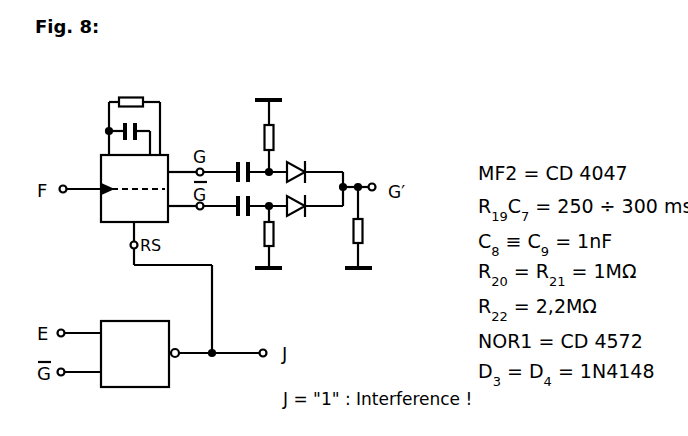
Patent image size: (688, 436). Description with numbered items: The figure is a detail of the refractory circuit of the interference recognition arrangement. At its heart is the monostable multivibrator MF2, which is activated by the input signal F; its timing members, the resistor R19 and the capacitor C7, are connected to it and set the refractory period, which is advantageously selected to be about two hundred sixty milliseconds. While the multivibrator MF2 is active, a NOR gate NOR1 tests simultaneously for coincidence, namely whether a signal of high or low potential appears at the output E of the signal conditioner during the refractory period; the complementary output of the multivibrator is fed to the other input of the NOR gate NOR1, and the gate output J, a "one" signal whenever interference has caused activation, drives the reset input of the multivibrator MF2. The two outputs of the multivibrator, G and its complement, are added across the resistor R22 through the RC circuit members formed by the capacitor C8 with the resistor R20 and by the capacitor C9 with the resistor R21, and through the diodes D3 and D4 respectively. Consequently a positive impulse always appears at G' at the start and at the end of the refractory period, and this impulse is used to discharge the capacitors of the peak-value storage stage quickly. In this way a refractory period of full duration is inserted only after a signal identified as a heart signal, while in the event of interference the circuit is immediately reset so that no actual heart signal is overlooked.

The monostable multivibrator MF2 is at (134, 188).
The timing resistor R19 is at (134, 111).
The timing capacitor C7 is at (110, 139).
The RC circuit capacitor C8 is at (259, 159).
The RC circuit capacitor C9 is at (259, 224).
The RC circuit resistor R20 is at (283, 137).
The RC circuit resistor R21 is at (283, 235).
The summing resistor R22 is at (374, 226).
The diode D3 is at (315, 179).
The diode D4 is at (315, 217).
The NOR gate NOR1 is at (140, 354).